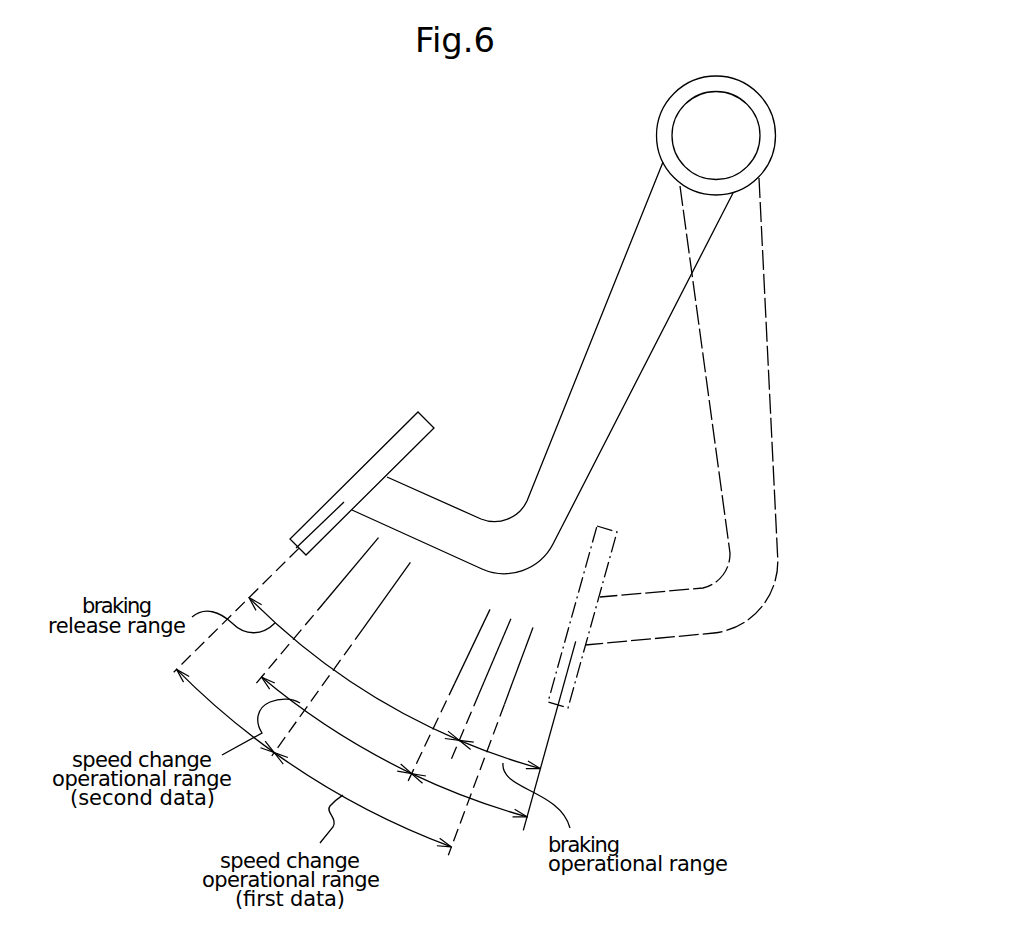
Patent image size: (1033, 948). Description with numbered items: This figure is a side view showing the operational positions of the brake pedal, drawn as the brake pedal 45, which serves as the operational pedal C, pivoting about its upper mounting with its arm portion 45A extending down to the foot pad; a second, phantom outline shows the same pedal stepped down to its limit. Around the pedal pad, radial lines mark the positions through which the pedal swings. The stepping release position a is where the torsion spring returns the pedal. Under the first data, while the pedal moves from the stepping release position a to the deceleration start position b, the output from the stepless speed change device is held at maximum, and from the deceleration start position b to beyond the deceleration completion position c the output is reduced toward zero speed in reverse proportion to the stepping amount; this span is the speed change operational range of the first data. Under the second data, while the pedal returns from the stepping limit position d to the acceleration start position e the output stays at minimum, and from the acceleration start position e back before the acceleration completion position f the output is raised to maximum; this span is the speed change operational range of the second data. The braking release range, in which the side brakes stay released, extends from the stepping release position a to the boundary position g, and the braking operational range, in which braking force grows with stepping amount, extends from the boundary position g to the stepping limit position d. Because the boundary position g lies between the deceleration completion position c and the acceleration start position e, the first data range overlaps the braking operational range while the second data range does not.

The brake pedal 45 is at (722, 500).
The pedal arm 45A is at (573, 398).
The operational pedal C is at (609, 278).
The stepping release position a is at (227, 619).
The deceleration start position b is at (334, 671).
The deceleration completion position c is at (485, 753).
The stepping limit position d is at (544, 750).
The acceleration start position e is at (442, 707).
The acceleration completion position f is at (309, 624).
The boundary position g is at (475, 698).